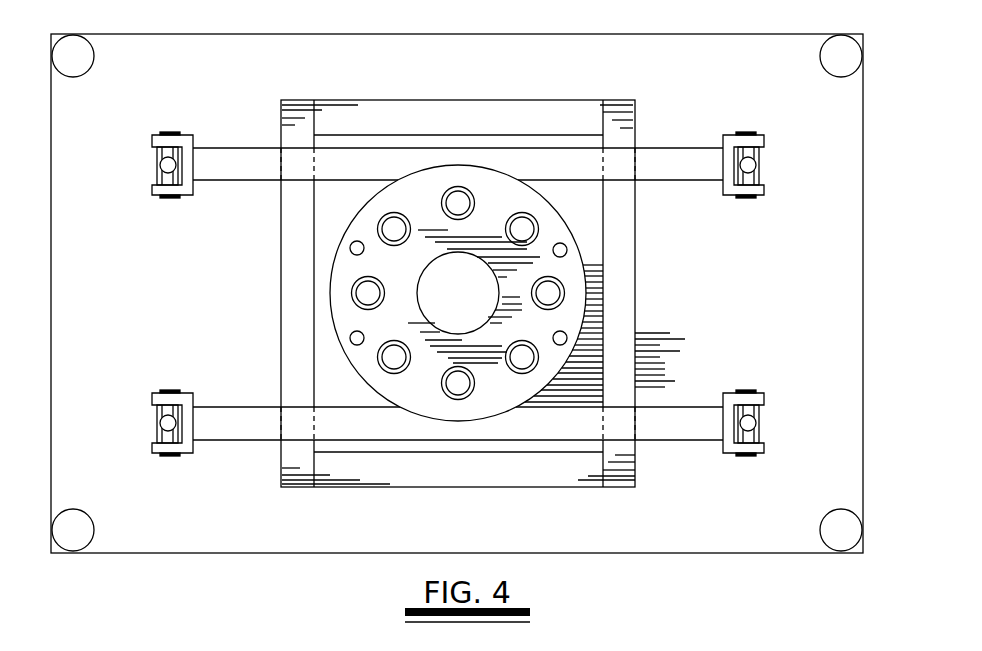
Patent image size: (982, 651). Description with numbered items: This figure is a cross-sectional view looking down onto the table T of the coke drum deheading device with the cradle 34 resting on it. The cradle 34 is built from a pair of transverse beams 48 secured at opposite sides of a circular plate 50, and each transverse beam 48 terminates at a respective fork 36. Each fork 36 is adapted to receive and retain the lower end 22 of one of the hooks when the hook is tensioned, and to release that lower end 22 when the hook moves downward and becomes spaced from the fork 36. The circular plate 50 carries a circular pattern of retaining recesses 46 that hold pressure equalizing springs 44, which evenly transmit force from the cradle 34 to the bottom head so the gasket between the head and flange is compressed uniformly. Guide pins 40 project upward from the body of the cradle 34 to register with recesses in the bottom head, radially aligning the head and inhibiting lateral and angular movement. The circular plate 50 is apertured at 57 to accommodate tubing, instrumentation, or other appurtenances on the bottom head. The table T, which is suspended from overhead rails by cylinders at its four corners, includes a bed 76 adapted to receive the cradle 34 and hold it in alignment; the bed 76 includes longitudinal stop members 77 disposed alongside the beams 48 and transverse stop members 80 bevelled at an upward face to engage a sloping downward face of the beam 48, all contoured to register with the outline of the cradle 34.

The table T is at (795, 313).
The lower end 22 is at (772, 166).
The fork 36 is at (760, 188).
The transverse beam 48 is at (227, 162).
The cradle 34 is at (330, 278).
The circular plate 50 is at (418, 395).
The aperture 57 is at (433, 312).
The retaining recess 46 is at (522, 230).
The pressure equalizing spring 44 is at (520, 232).
The guide pin 40 is at (566, 251).
The transverse stop member 80 is at (620, 342).
The bed 76 is at (645, 374).
The longitudinal stop member 77 is at (575, 470).